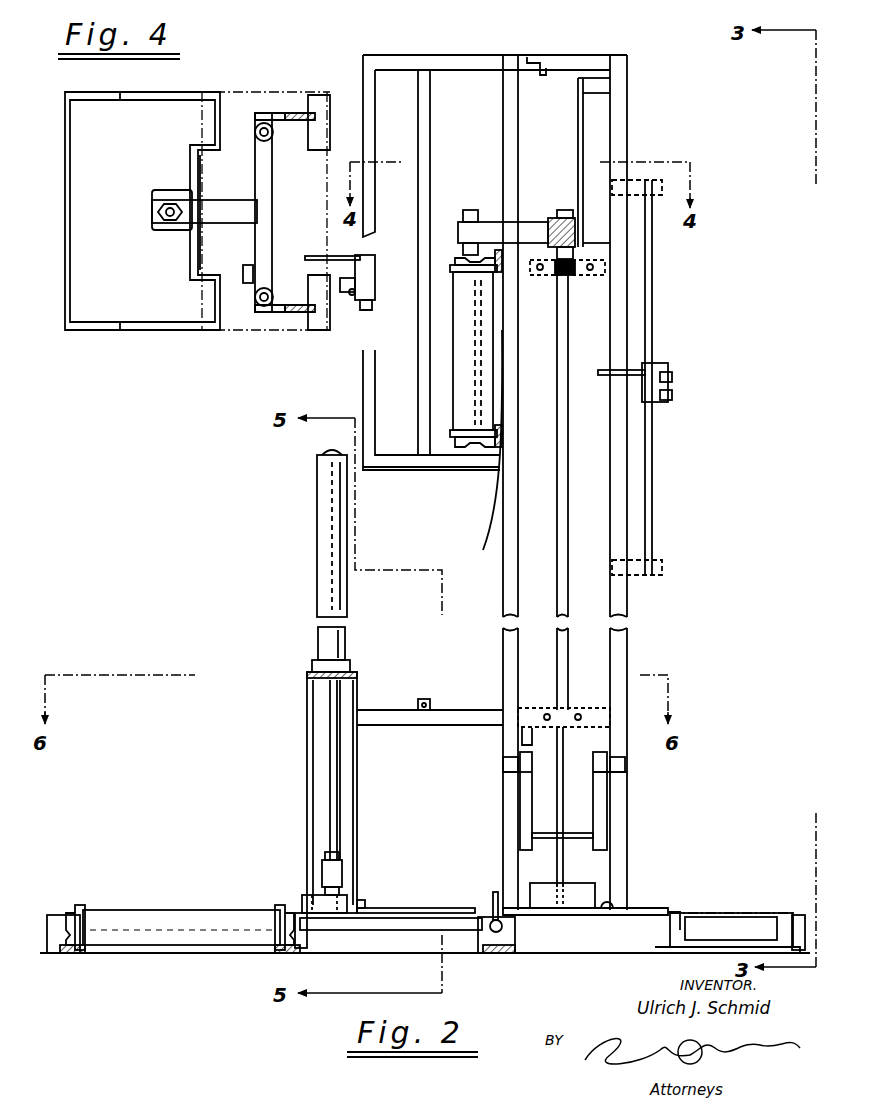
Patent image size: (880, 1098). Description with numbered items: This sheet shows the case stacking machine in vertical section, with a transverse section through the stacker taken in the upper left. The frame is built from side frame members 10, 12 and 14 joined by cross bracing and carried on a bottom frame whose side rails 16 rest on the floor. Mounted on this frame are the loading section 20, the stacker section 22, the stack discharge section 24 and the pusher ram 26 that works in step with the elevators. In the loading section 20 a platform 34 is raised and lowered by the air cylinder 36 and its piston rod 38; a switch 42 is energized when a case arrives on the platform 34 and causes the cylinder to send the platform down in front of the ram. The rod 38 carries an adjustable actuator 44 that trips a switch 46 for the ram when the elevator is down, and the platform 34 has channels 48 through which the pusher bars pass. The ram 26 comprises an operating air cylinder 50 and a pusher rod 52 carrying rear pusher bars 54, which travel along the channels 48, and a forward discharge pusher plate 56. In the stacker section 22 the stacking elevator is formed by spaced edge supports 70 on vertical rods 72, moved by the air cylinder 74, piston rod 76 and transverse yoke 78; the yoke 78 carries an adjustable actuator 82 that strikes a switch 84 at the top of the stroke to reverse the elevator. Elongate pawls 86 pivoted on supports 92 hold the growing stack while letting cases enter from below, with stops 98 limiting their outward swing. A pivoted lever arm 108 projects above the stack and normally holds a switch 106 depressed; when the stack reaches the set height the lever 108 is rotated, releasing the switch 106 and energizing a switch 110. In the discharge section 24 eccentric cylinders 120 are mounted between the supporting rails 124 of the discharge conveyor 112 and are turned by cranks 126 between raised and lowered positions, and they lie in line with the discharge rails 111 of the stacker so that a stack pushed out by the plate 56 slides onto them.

In FIG. 2, the side frame member 10 is at (307, 694).
In FIG. 2, the side frame member 12 is at (503, 640).
In FIG. 4, the side frame member 12 is at (228, 95).
In FIG. 2, the side frame member 14 is at (620, 645).
In FIG. 4, the side frame member 14 is at (310, 95).
In FIG. 2, the side rail 16 is at (55, 940).
In FIG. 2, the loading section 20 is at (300, 783).
In FIG. 2, the stacker section 22 is at (672, 302).
In FIG. 4, the stacker section 22 is at (135, 348).
In FIG. 2, the stack discharge section 24 is at (730, 807).
In FIG. 2, the pusher ram 26 is at (160, 895).
In FIG. 2, the platform 34 is at (420, 908).
In FIG. 2, the air cylinder 36 is at (318, 540).
In FIG. 2, the piston rod 38 is at (335, 728).
In FIG. 2, the switch 42 is at (420, 700).
In FIG. 2, the adjustable actuator 44 is at (320, 860).
In FIG. 2, the switch 46 is at (302, 905).
In FIG. 2, the channel 48 is at (378, 906).
In FIG. 2, the operating air cylinder 50 is at (205, 930).
In FIG. 2, the pusher rod 52 is at (400, 928).
In FIG. 2, the pusher bar 54 is at (320, 940).
In FIG. 2, the pusher plate 56 is at (492, 898).
In FIG. 2, the edge support 70 is at (578, 893).
In FIG. 2, the rod 72 is at (567, 513).
In FIG. 4, the rod 72 is at (262, 141).
In FIG. 2, the air cylinder 74 is at (460, 340).
In FIG. 4, the air cylinder 74 is at (155, 222).
In FIG. 2, the piston rod 76 is at (468, 212).
In FIG. 4, the piston rod 76 is at (170, 204).
In FIG. 2, the transverse yoke 78 is at (528, 233).
In FIG. 4, the transverse yoke 78 is at (275, 190).
In FIG. 2, the adjustable actuator 82 is at (545, 262).
In FIG. 4, the adjustable actuator 82 is at (248, 262).
In FIG. 2, the switch 84 is at (543, 78).
In FIG. 2, the pawl 86 is at (527, 796).
In FIG. 2, the support 92 is at (553, 845).
In FIG. 2, the stop 98 is at (505, 764).
In FIG. 2, the switch 106 is at (670, 380).
In FIG. 4, the switch 106 is at (372, 315).
In FIG. 2, the lever arm 108 is at (600, 370).
In FIG. 4, the lever arm 108 is at (312, 255).
In FIG. 2, the switch 110 is at (672, 398).
In FIG. 2, the discharge rail 111 is at (608, 915).
In FIG. 2, the discharge conveyor 112 is at (715, 913).
In FIG. 2, the eccentric cylinder 120 is at (745, 920).
In FIG. 2, the supporting rail 124 is at (798, 915).
In FIG. 2, the crank 126 is at (675, 912).